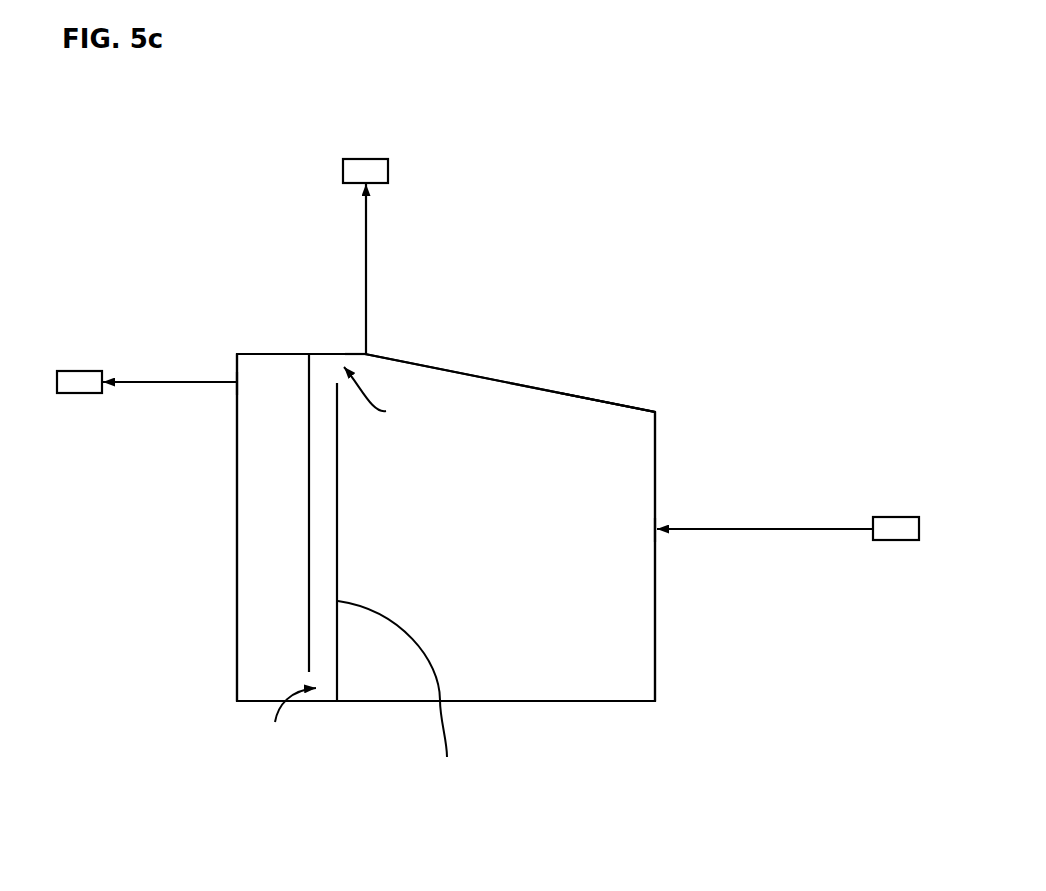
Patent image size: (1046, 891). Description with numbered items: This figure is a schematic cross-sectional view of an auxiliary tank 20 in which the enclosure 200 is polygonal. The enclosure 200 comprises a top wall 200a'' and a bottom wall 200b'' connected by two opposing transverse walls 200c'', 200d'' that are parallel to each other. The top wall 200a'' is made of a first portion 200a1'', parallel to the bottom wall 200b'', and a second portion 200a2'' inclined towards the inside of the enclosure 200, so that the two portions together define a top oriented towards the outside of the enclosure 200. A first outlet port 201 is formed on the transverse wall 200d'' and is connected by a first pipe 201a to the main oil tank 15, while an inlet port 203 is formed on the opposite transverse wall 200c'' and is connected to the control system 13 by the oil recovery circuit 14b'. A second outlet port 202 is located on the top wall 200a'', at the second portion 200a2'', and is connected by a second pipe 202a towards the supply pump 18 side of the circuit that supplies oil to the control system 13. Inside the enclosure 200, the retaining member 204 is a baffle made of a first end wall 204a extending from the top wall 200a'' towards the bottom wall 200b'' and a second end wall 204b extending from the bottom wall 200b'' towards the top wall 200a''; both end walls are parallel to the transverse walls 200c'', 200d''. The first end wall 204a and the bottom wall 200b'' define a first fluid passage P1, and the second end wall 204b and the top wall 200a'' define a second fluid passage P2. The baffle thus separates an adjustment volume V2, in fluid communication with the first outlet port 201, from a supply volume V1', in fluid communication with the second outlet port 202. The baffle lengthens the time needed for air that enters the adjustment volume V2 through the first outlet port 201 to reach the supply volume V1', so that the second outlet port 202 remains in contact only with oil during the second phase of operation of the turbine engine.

The auxiliary tank 20 is at (819, 359).
The enclosure 200 is at (656, 440).
The top wall 200a'' is at (510, 371).
The first portion 200a1'' is at (298, 326).
The second portion 200a2'' is at (615, 377).
The bottom wall 200b'' is at (446, 732).
The transverse wall 200c'' is at (703, 561).
The transverse wall 200d'' is at (192, 527).
The first outlet port 201 is at (236, 384).
The first pipe 201a is at (143, 385).
The second outlet port 202 is at (357, 352).
The second pipe 202a is at (366, 242).
The inlet port 203 is at (660, 536).
The retaining member 204 is at (354, 656).
The first end wall 204a is at (309, 628).
The second end wall 204b is at (407, 693).
The first fluid passage P1 is at (289, 717).
The second fluid passage P2 is at (378, 392).
The supply volume V1' is at (496, 542).
The adjustment volume V2 is at (273, 527).
The control system 13 is at (893, 524).
The oil recovery circuit 14b' is at (765, 500).
The main oil tank 15 is at (62, 385).
The supply pump 18 is at (386, 176).